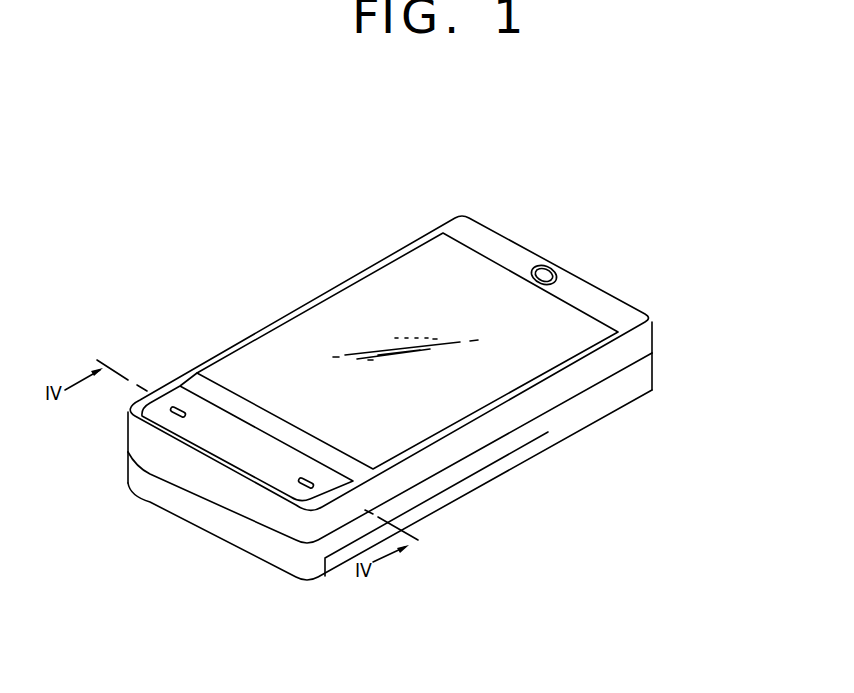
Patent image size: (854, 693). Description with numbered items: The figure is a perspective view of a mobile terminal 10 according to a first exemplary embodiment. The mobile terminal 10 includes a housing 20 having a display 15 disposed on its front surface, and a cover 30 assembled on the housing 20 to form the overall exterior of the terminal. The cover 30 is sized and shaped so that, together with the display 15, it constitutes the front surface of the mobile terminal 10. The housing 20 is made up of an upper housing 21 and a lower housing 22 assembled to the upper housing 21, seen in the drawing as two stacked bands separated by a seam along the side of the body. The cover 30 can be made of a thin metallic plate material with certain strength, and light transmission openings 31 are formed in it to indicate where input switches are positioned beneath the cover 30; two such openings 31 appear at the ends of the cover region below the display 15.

The mobile terminal 10 is at (598, 257).
The display 15 is at (350, 310).
The housing 20 is at (452, 446).
The upper housing 21 is at (645, 342).
The lower housing 22 is at (428, 466).
The cover 30 is at (236, 456).
The light transmission openings 31 is at (172, 414).